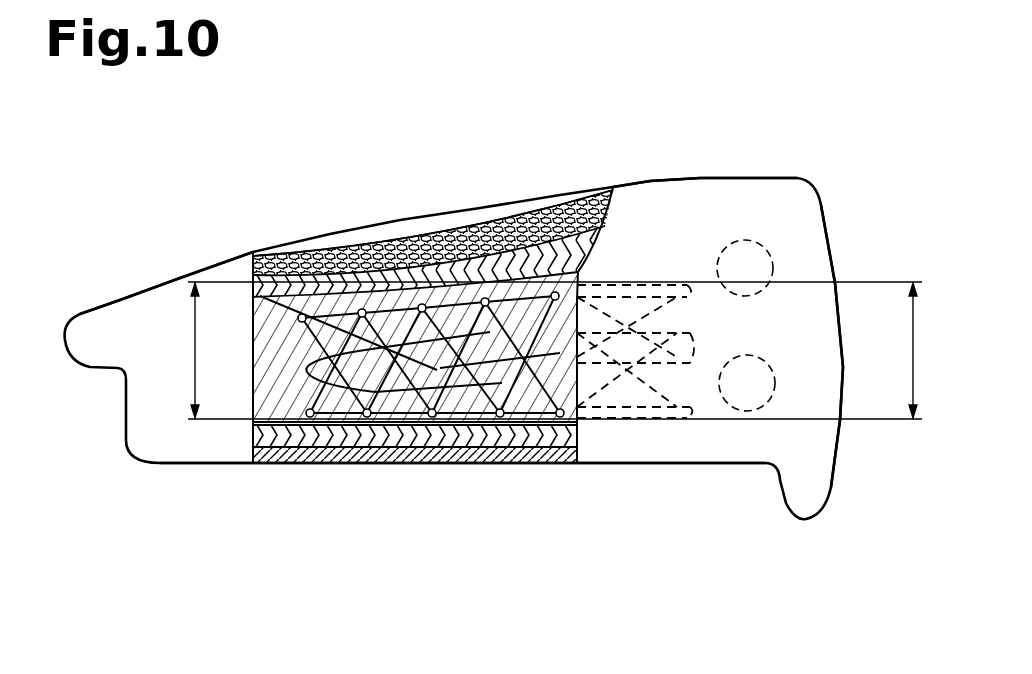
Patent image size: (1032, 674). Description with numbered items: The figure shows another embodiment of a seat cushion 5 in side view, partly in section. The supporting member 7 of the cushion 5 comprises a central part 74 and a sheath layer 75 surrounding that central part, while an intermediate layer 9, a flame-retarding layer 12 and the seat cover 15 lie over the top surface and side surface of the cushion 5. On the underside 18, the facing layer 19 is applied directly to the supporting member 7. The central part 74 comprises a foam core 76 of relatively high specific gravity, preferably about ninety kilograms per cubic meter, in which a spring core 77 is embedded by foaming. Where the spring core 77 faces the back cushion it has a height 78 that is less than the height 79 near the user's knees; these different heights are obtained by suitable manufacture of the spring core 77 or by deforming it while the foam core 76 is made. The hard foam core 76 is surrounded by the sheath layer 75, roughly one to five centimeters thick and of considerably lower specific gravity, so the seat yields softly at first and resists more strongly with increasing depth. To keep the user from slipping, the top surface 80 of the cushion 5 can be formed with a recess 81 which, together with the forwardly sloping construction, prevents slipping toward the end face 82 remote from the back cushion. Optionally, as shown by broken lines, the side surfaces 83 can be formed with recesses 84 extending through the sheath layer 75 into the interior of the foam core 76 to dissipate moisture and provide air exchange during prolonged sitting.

The seat cushion 5 is at (818, 92).
The supporting member 7 is at (243, 348).
The intermediate layer 9 is at (398, 250).
The flame-retarding layer 12 is at (497, 257).
The seat cover 15 is at (565, 258).
The underside 18 is at (338, 516).
The facing layer 19 is at (415, 455).
The central part 74 is at (262, 325).
The sheath layer 75 is at (345, 258).
The foam core 76 is at (270, 399).
The spring core 77 is at (288, 248).
The height 78 is at (187, 368).
The height 79 is at (908, 365).
The top surface 80 is at (700, 175).
The recess 81 is at (455, 206).
The end face 82 is at (848, 380).
The side surfaces 83 is at (693, 375).
The recesses 84 is at (780, 265).